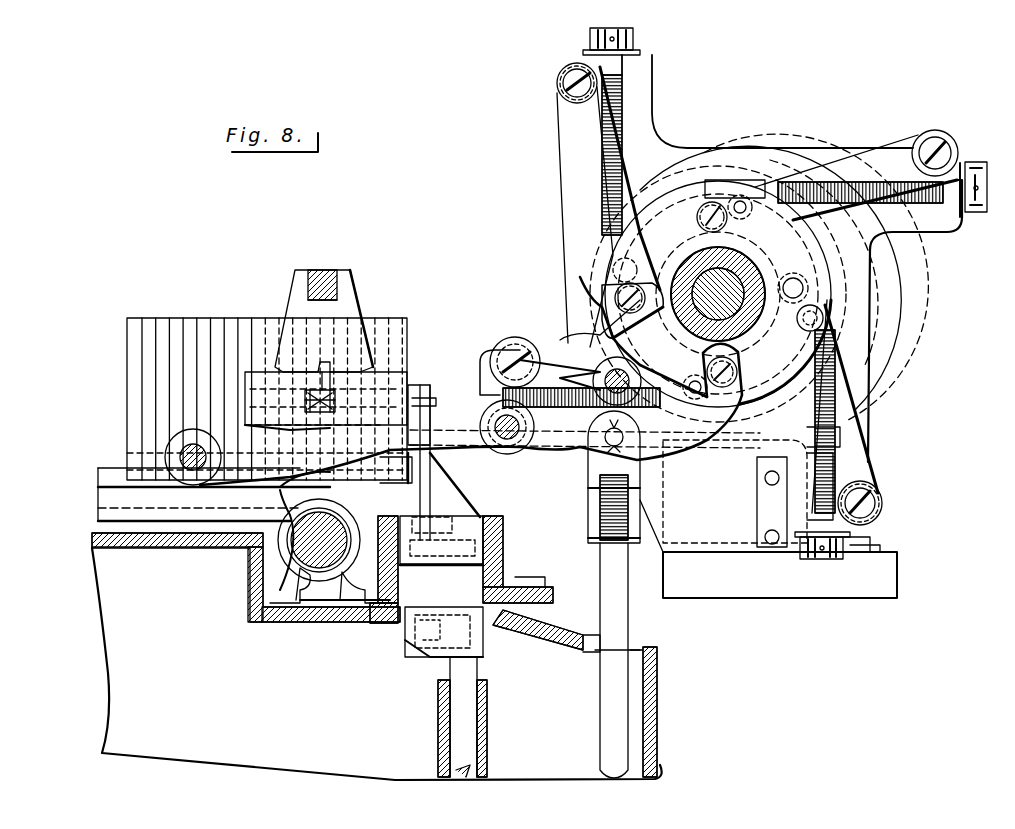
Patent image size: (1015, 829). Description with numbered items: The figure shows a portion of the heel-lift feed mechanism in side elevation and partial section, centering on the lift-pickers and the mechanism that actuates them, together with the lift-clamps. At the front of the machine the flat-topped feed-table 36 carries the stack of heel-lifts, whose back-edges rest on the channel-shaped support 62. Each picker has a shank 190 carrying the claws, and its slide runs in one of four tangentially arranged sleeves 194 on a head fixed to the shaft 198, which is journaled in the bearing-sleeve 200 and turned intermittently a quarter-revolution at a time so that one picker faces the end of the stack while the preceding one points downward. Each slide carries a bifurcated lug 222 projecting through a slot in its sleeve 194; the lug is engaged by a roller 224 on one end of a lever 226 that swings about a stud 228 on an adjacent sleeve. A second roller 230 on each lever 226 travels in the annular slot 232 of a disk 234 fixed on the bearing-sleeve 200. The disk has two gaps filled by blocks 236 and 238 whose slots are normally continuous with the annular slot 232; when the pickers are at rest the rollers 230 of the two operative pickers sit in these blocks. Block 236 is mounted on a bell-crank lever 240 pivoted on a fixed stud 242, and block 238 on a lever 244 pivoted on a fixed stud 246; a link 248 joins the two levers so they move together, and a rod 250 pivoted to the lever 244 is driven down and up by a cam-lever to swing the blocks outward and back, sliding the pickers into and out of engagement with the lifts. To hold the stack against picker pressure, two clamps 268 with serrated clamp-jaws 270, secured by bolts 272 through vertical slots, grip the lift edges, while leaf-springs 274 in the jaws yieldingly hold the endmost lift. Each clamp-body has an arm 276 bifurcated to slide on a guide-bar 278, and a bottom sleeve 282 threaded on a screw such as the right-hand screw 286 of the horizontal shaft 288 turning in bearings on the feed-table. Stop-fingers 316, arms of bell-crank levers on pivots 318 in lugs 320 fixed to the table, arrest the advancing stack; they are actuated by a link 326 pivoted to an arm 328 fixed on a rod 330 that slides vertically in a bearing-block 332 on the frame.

The feed-table 36 is at (95, 537).
The channel-shaped support 62 is at (100, 475).
The shank 190 is at (640, 46).
The sleeve 194 is at (572, 228).
The shaft 198 is at (850, 265).
The sleeve 200 is at (855, 250).
The bifurcated lug 222 is at (725, 182).
The roller 224 is at (806, 223).
The lever 226 is at (578, 170).
The stud 228 is at (560, 85).
The roller 230 is at (690, 228).
The annular slot 232 is at (868, 325).
The disk 234 is at (862, 348).
The block 236 is at (608, 312).
The block 238 is at (868, 372).
The bell-crank lever 240 is at (595, 345).
The fixed stud 242 is at (578, 368).
The lever 244 is at (668, 448).
The fixed stud 246 is at (185, 455).
The link 248 is at (540, 358).
The rod 250 is at (628, 612).
The clamp 268 is at (283, 362).
The clamp-jaw 270 is at (380, 372).
The bolt 272 is at (330, 392).
The leaf-springs 274 is at (415, 385).
The arm 276 is at (302, 296).
The guide-bar 278 is at (325, 272).
The sleeve 282 is at (288, 546).
The right-hand screw 286 is at (292, 567).
The horizontal shaft 288 is at (322, 600).
The stop-finger 316 is at (446, 460).
The pivot 318 is at (460, 527).
The lug 320 is at (505, 560).
The link 326 is at (420, 615).
The arm 328 is at (428, 644).
The rod 330 is at (470, 660).
The bearing-block 332 is at (488, 707).